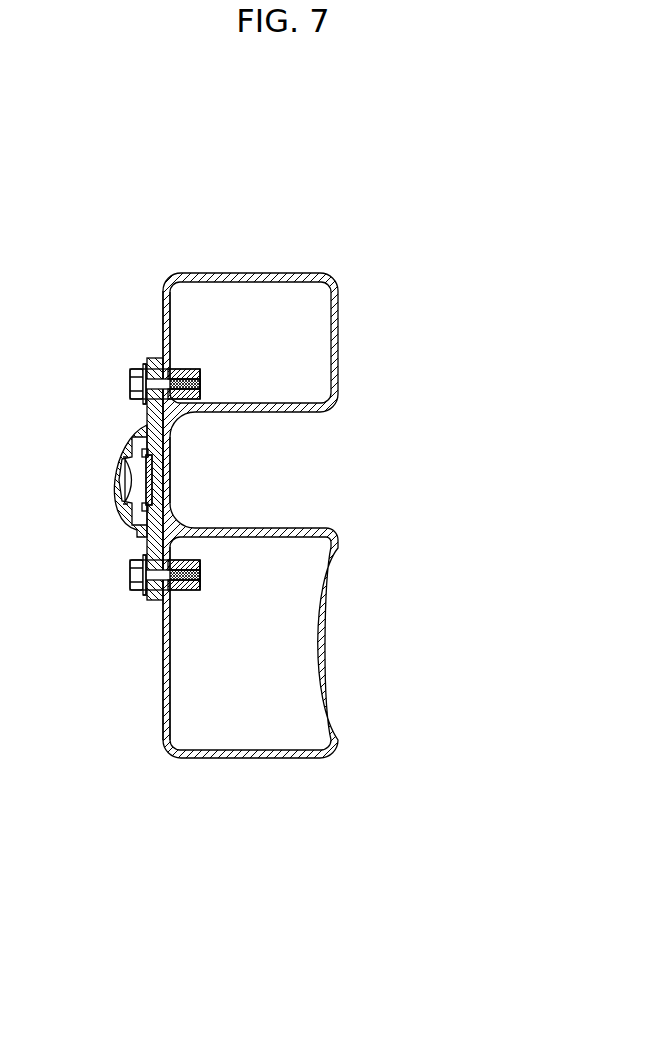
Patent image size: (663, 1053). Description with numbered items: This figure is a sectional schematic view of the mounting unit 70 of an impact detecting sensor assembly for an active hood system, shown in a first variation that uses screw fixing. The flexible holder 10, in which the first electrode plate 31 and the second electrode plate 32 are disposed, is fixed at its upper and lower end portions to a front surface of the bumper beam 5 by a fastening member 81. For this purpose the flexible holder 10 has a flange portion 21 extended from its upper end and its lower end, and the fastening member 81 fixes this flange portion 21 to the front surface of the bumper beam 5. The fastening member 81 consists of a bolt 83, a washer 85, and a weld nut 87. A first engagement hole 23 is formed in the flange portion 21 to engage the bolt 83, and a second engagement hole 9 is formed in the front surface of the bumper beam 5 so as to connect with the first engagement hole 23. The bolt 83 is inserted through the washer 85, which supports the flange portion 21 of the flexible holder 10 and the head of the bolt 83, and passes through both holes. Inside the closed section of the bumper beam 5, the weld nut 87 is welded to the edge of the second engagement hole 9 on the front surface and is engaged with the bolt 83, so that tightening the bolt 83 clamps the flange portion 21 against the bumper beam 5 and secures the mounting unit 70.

The bumper beam 5 is at (273, 772).
The flange portion 21 is at (172, 424).
The flexible holder 10 is at (138, 413).
The second electrode plate 32 is at (124, 470).
The first electrode plate 31 is at (153, 490).
The second engagement hole 9 is at (185, 397).
The first engagement hole 23 is at (130, 383).
The bolt 83 is at (185, 368).
The washer 85 is at (142, 360).
The weld nut 87 is at (203, 371).
The fastening member 81 is at (240, 196).
The mounting unit 70 is at (214, 382).